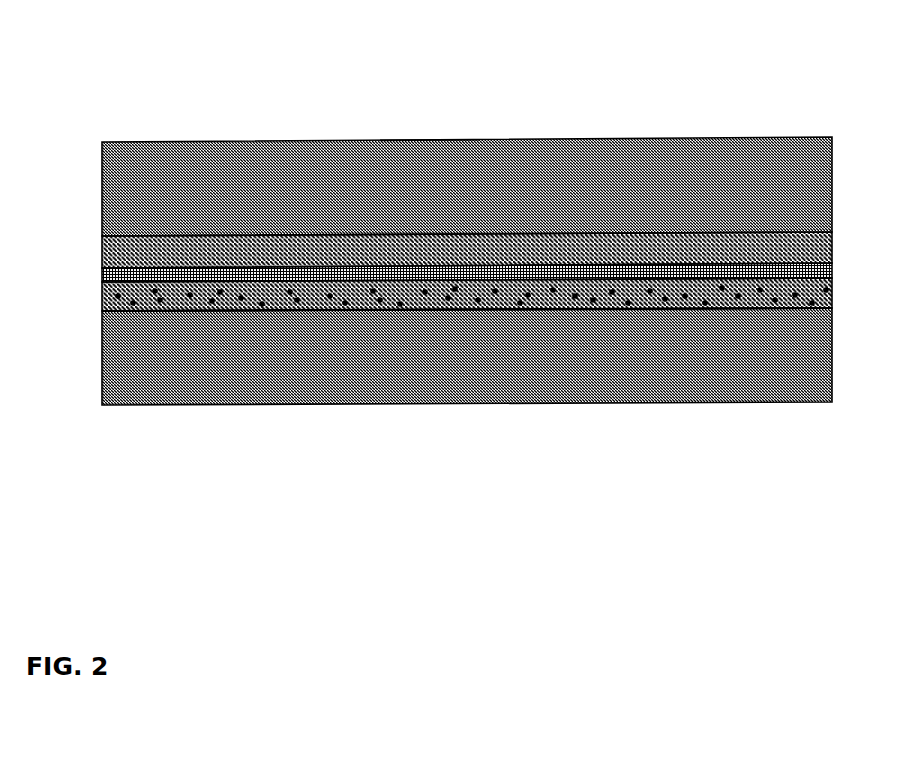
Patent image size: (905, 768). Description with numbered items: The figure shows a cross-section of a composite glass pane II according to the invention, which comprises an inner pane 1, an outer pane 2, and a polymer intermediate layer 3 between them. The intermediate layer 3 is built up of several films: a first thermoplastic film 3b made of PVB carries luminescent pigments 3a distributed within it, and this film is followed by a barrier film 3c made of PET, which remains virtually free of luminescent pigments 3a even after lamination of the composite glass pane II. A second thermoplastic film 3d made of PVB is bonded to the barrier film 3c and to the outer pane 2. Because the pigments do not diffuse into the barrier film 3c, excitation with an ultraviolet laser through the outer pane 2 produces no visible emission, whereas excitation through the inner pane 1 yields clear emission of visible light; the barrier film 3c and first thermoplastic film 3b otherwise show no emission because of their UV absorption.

The inner pane 1 is at (242, 421).
The outer pane 2 is at (216, 112).
The composite glass pane II is at (433, 137).
The polymer intermediate layer 3 is at (447, 249).
The luminescent pigments 3a is at (101, 288).
The first thermoplastic film 3b is at (101, 309).
The barrier film 3c is at (101, 269).
The second thermoplastic film 3d is at (101, 249).